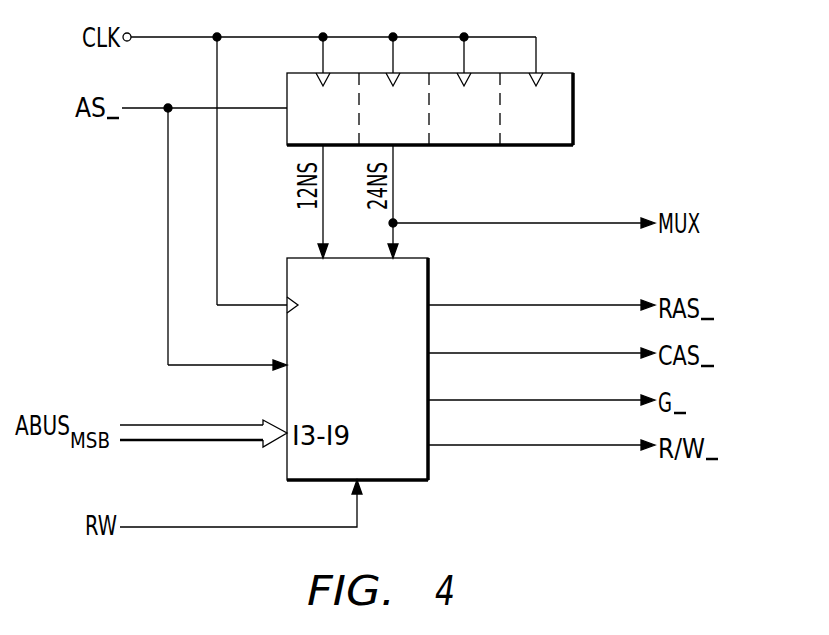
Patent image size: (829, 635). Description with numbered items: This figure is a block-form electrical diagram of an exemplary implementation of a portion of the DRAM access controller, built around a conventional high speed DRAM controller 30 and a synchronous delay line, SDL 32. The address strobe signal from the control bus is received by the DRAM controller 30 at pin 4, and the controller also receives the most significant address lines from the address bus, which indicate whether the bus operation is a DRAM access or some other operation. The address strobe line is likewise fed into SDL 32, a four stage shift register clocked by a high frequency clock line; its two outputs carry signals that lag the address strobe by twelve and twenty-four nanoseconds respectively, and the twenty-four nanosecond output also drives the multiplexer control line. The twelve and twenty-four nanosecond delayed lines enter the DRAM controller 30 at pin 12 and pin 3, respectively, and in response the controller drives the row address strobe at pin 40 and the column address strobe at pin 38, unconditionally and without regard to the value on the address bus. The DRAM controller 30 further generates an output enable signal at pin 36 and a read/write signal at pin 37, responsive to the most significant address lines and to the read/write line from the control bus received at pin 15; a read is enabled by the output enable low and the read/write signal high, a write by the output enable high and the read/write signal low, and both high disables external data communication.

The DRAM controller 30 is at (395, 480).
The SDL 32 is at (573, 108).
The pin 12 is at (322, 217).
The pin 3 is at (392, 217).
The pin 4 is at (235, 365).
The pin 40 is at (527, 305).
The pin 38 is at (527, 355).
The G_ output pin 36 is at (527, 402).
The R/W_ output pin 37 is at (527, 448).
The pin 15 is at (243, 488).